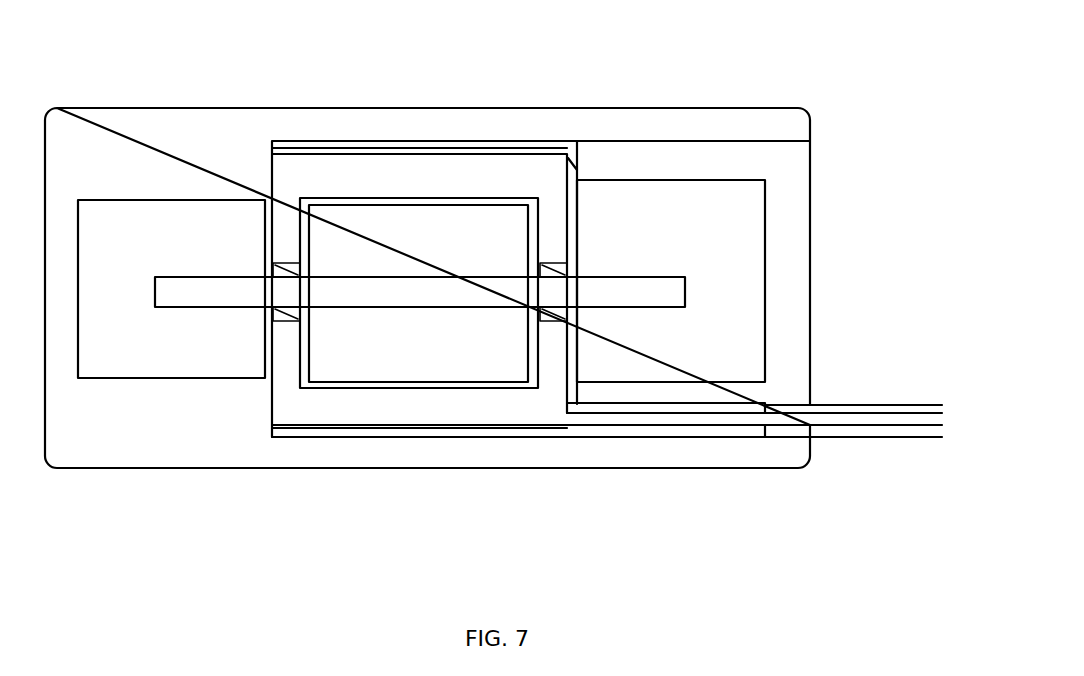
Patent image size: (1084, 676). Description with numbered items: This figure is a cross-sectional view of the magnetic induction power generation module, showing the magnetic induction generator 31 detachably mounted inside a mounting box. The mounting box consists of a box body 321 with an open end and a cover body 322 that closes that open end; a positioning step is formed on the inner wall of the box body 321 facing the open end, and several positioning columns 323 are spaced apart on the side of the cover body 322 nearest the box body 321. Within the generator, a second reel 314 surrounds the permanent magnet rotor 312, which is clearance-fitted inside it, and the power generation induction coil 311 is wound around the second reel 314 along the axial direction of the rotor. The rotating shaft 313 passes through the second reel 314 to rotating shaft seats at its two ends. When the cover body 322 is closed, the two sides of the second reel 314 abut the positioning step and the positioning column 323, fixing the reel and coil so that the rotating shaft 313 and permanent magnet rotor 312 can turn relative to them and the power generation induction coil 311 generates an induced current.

The magnetic induction generator 31 is at (420, 296).
The power generation induction coil 311 is at (462, 150).
The permanent magnet rotor 312 is at (345, 357).
The rotating shaft 313 is at (648, 300).
The second reel 314 is at (505, 402).
The box body 321 is at (393, 456).
The cover body 322 is at (785, 249).
The positioning column 323 is at (643, 162).